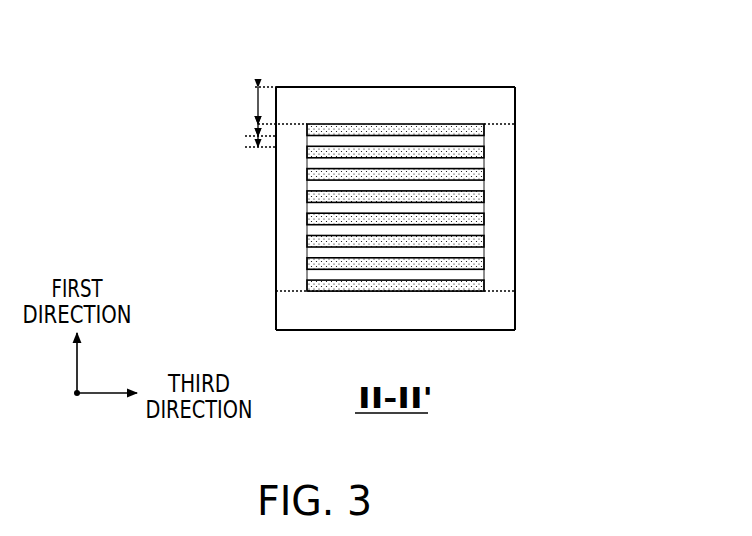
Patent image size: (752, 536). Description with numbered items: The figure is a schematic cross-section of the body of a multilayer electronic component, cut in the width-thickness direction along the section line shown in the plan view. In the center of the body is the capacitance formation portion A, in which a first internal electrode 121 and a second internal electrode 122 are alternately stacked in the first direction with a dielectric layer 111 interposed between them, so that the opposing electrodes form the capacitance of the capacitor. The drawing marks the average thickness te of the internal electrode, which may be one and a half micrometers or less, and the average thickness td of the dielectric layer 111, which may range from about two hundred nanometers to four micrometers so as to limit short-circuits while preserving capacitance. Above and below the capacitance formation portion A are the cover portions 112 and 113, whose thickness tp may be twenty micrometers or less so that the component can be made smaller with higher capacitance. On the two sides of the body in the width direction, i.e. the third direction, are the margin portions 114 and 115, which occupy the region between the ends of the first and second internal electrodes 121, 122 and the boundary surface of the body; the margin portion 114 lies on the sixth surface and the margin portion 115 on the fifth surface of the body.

The cover portion 112 is at (402, 107).
The cover portion 113 is at (508, 307).
The margin portion 114 is at (290, 246).
The margin portion 115 is at (508, 232).
The dielectric layer 111 is at (484, 134).
The first internal electrode 121 is at (484, 128).
The second internal electrode 122 is at (484, 148).
The capacitance formation portion A is at (299, 212).
The thickness of cover portion tp is at (253, 105).
The average thickness of internal electrode te is at (256, 130).
The average thickness of dielectric layer td is at (256, 141).